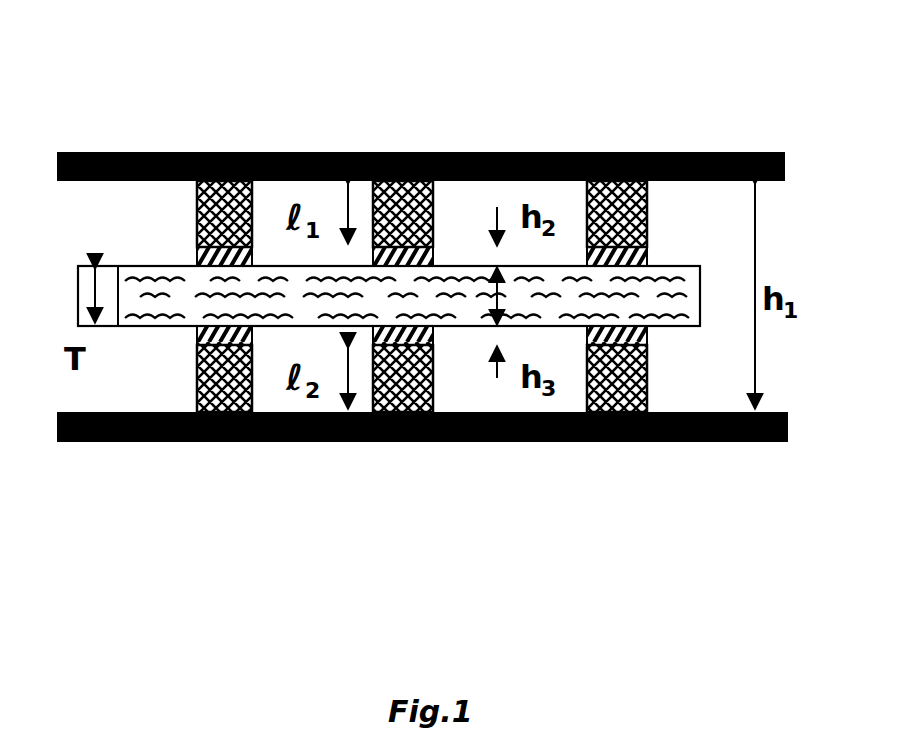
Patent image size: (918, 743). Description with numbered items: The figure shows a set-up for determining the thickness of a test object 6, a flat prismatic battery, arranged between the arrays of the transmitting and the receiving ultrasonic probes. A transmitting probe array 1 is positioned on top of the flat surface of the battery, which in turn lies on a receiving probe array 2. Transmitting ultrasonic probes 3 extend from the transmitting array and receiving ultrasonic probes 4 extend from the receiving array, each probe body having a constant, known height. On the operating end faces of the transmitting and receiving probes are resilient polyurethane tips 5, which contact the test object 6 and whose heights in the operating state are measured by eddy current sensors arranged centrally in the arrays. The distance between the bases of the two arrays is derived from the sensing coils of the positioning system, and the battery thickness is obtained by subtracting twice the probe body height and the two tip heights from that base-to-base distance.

The transmitting probe array 1 is at (715, 153).
The receiving probe array 2 is at (710, 441).
The transmitting ultrasonic probes 3 is at (565, 153).
The receiving ultrasonic probes 4 is at (570, 441).
The polyurethane tips 5 is at (197, 260).
The test object 6 is at (682, 281).